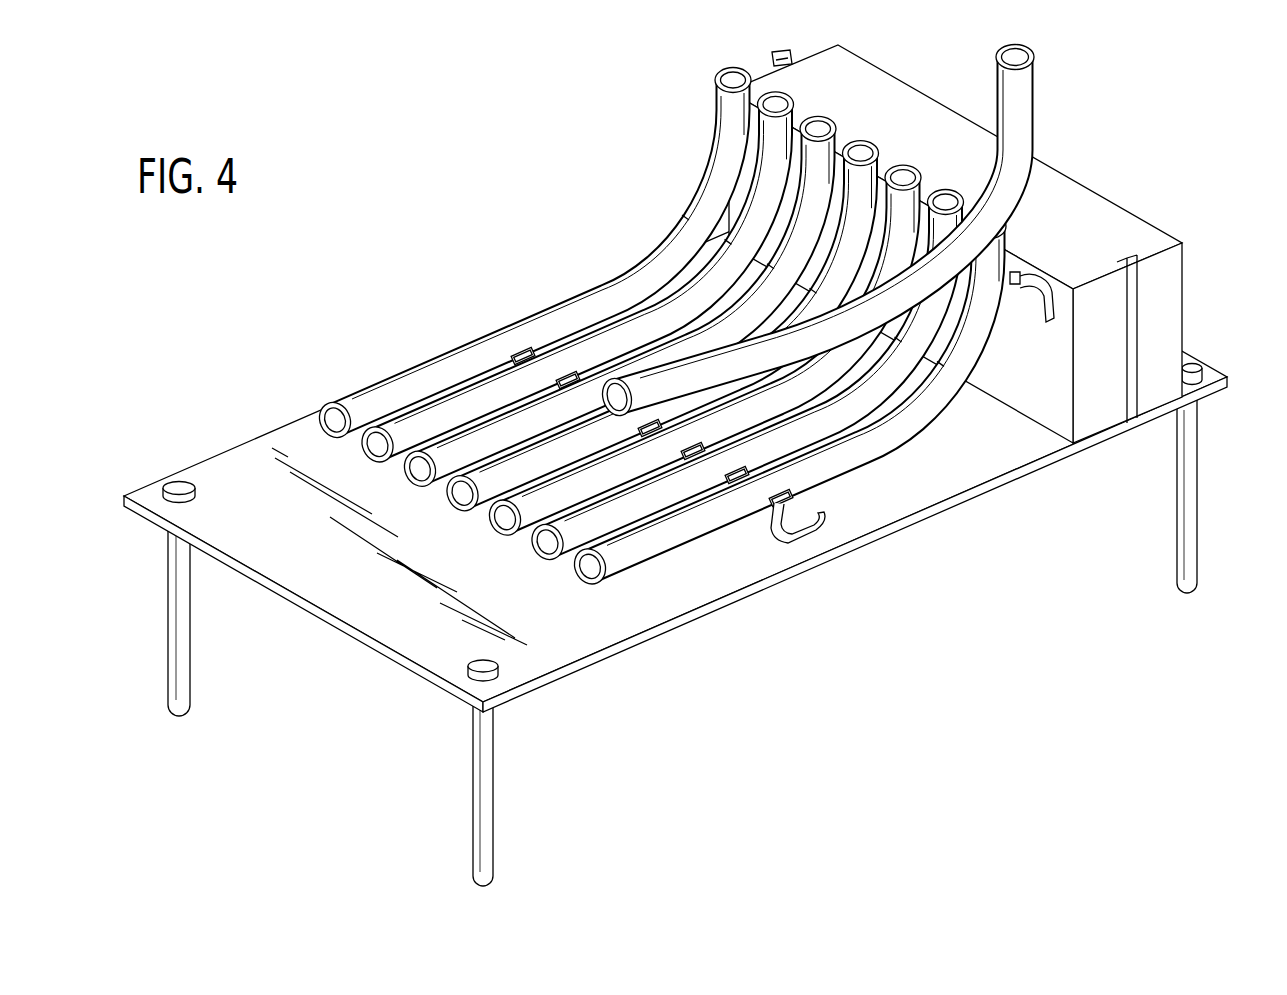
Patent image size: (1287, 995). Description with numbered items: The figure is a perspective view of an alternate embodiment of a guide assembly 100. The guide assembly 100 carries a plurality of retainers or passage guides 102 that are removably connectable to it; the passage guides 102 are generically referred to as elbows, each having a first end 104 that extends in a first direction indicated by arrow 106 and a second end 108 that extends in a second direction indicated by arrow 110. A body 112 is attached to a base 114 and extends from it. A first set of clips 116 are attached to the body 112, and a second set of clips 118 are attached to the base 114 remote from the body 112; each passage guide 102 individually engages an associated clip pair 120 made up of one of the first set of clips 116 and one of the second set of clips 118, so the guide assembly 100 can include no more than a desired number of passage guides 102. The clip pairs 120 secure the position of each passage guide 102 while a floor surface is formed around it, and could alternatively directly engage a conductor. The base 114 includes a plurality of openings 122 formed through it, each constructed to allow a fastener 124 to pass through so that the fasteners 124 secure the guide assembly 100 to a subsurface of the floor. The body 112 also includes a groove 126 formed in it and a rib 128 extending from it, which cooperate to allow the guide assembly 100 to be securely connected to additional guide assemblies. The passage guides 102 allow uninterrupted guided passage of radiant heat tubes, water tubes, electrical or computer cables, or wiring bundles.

The guide assembly 100 is at (685, 452).
The passage guides 102 is at (600, 337).
The first end 104 is at (500, 383).
The arrow 106 is at (353, 367).
The second end 108 is at (768, 168).
The arrow 110 is at (697, 34).
The body 112 is at (1108, 218).
The base 114 is at (578, 638).
The first set of clips 116 is at (1060, 320).
The second set of clips 118 is at (827, 548).
The clip pair 120 is at (1028, 330).
The openings 122 is at (210, 496).
The fastener 124 is at (168, 618).
The groove 126 is at (1139, 282).
The rib 128 is at (780, 55).